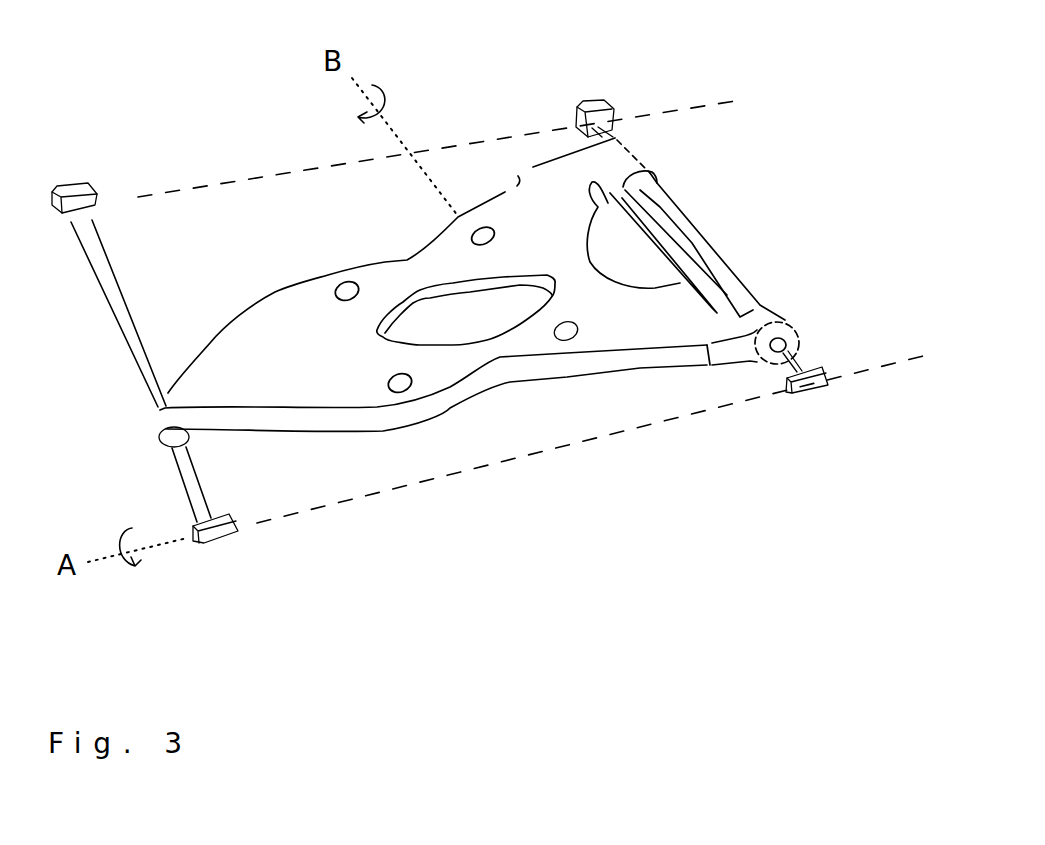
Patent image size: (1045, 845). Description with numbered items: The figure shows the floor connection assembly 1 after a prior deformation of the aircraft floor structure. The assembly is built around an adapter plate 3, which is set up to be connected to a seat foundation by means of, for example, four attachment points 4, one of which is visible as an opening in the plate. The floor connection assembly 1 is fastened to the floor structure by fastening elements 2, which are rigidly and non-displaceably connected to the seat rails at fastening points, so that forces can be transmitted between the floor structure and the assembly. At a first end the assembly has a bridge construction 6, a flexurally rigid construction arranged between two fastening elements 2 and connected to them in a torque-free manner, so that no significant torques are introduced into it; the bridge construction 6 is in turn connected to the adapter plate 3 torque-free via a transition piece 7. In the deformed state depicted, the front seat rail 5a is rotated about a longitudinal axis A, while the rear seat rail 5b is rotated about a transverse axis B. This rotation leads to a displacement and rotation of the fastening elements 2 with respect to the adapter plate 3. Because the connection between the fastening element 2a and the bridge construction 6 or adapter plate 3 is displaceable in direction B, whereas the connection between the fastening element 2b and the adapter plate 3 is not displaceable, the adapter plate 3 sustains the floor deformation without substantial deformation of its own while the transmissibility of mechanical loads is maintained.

The floor connection assembly 1 is at (735, 480).
The fastening elements 2 is at (598, 104).
The fastening element 2a is at (74, 190).
The fastening element 2b is at (230, 538).
The adapter plate 3 is at (360, 378).
The attachment points 4 is at (567, 333).
The front seat rail 5a is at (518, 456).
The rear seat rail 5b is at (273, 173).
The bridge construction 6 is at (128, 345).
The transition piece 7 is at (160, 430).